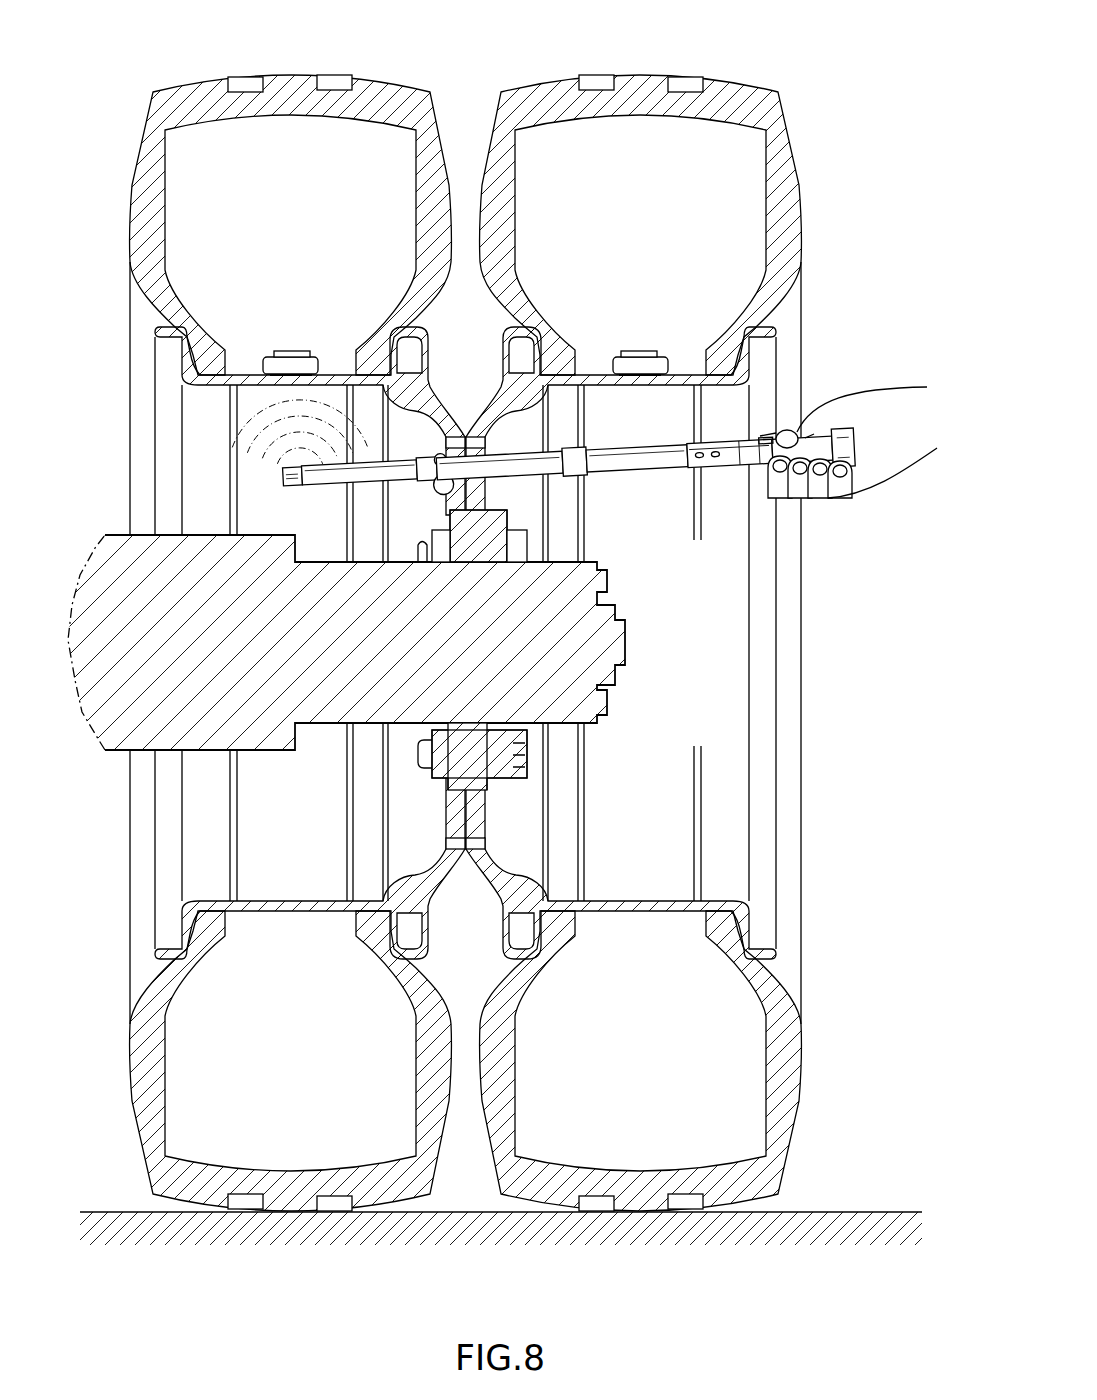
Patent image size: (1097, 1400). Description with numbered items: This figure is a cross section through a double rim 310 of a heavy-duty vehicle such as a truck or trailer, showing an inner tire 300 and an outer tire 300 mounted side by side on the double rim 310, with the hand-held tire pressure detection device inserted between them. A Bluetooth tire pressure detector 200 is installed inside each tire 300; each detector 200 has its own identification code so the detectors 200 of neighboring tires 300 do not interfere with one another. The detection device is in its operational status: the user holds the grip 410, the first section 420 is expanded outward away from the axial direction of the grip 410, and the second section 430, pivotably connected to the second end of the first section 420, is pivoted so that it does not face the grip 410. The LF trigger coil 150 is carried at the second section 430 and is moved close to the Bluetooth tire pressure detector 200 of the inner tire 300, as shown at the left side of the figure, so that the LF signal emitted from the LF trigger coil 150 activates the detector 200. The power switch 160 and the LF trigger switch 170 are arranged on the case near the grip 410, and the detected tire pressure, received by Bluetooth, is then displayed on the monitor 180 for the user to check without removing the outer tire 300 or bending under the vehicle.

The tire 300 is at (417, 95).
The double rim 310 is at (767, 902).
The Bluetooth tire pressure detector 200 is at (295, 365).
The LF trigger coil 150 is at (294, 465).
The second section 430 is at (302, 495).
The first section 420 is at (640, 478).
The power switch 160 is at (697, 445).
The LF trigger switch 170 is at (713, 445).
The monitor 180 is at (762, 435).
The grip 410 is at (723, 470).